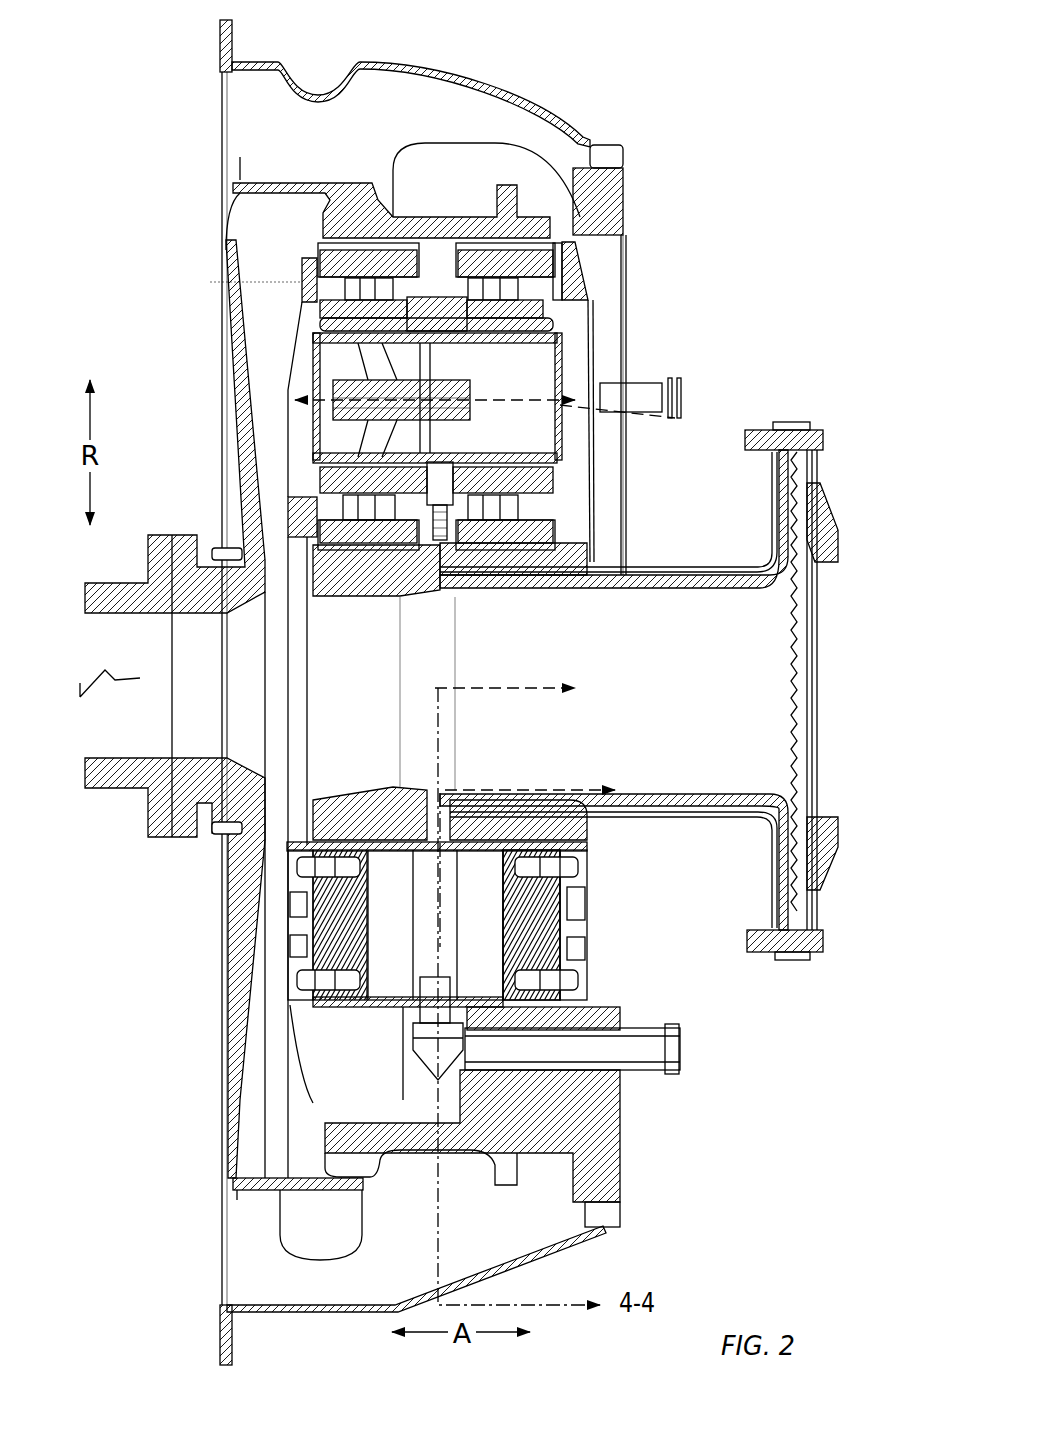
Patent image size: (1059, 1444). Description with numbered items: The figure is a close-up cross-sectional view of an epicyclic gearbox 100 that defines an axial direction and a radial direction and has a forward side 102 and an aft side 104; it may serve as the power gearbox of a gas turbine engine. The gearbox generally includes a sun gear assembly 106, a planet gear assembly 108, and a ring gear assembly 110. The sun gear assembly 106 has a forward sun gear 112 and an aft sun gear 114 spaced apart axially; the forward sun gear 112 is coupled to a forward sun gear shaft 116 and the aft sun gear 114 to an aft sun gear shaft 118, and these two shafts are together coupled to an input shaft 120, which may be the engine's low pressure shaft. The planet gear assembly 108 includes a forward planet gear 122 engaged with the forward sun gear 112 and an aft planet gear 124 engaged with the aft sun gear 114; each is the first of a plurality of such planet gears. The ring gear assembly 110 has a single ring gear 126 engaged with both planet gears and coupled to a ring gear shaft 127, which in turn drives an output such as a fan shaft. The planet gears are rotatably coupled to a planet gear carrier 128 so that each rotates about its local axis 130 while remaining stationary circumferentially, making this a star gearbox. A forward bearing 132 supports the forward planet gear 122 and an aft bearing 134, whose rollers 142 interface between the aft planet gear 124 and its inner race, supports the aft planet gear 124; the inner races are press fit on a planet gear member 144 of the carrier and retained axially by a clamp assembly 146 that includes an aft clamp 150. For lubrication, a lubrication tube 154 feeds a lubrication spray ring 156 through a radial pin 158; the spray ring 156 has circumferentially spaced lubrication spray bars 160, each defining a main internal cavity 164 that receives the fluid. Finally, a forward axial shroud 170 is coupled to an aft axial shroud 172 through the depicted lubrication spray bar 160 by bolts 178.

The epicyclic gearbox 100 is at (730, 166).
The forward side 102 is at (162, 216).
The aft side 104 is at (746, 326).
The sun gear assembly 106 is at (652, 522).
The planet gear assembly 108 is at (608, 366).
The ring gear assembly 110 is at (206, 166).
The forward sun gear 112 is at (370, 592).
The aft sun gear 114 is at (553, 563).
The forward sun gear shaft 116 is at (623, 588).
The aft sun gear shaft 118 is at (713, 574).
The input shaft 120 is at (818, 540).
The forward planet gear 122 is at (372, 262).
The aft planet gear 124 is at (562, 257).
The ring gear 126 is at (430, 226).
The ring gear shaft 127 is at (236, 375).
The planet gear carrier 128 is at (440, 308).
The local axis 130 is at (682, 417).
The forward bearing 132 is at (338, 305).
The aft bearing 134 is at (560, 287).
The rollers 142 is at (560, 298).
The planet gear member 144 is at (495, 181).
The clamp assembly 146 is at (543, 437).
The aft clamp 150 is at (560, 458).
The lubrication tube 154 is at (677, 393).
The lubrication spray ring 156 is at (290, 930).
The radial pin 158 is at (437, 1050).
The lubrication spray bar 160 is at (616, 925).
The main internal cavity 164 is at (378, 920).
The forward axial shroud 170 is at (302, 282).
The aft axial shroud 172 is at (570, 382).
The bolts 178 is at (300, 868).